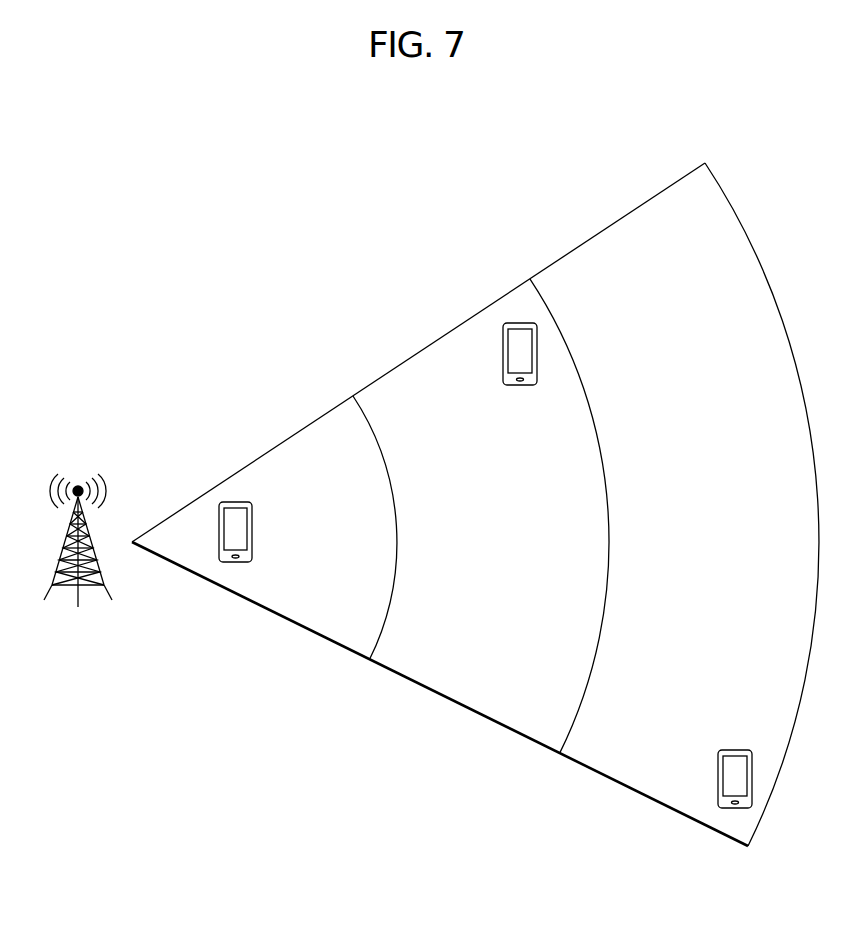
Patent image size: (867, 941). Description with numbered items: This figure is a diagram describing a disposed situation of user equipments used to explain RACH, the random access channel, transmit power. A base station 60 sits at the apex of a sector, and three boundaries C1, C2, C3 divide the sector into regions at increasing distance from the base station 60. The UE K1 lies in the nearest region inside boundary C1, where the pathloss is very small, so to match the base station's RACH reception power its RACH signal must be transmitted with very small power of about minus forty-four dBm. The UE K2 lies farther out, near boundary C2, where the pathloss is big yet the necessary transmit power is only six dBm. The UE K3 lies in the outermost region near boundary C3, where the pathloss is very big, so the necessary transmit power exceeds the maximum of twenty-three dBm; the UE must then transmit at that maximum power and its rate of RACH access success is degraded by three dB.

The base station 60 is at (87, 540).
The UE K1 is at (235, 532).
The UE K2 is at (520, 354).
The UE K3 is at (735, 779).
The first cell boundary C1 is at (370, 545).
The second cell boundary C2 is at (569, 534).
The third cell boundary C3 is at (762, 522).